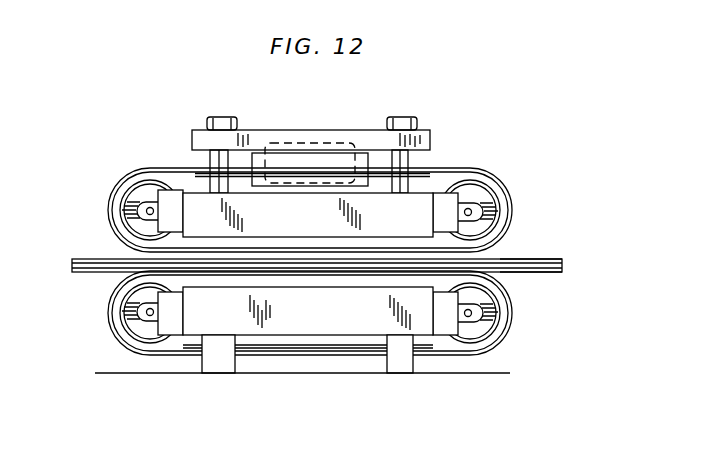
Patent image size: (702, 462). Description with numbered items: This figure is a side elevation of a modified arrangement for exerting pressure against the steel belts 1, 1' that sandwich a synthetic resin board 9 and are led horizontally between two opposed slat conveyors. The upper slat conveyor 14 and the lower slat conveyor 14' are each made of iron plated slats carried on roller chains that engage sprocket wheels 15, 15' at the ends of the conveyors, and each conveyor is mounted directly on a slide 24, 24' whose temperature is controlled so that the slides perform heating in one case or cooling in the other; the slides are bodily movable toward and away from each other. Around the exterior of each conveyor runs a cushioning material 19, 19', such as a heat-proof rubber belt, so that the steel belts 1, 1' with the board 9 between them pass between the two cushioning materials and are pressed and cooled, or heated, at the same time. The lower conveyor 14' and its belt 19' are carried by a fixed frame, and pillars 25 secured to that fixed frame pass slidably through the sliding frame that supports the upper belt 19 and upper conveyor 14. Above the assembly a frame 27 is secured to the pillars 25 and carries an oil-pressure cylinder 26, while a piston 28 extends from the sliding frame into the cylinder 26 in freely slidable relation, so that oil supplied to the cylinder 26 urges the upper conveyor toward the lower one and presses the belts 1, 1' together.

The frame 27 is at (202, 135).
The oil-pressure cylinder 26 is at (362, 158).
The piston 28 is at (303, 187).
The pillars 25 is at (200, 165).
The cushioning material 19 is at (296, 198).
The slat conveyor 14 is at (108, 210).
The sprocket wheel 15 is at (97, 225).
The slide 24 is at (308, 213).
The workpiece strip 9 is at (562, 265).
The steel belt 1 is at (531, 243).
The steel belt 1' is at (531, 288).
The cushioning material 19' is at (310, 340).
The slat conveyor 14' is at (308, 376).
The sprocket wheel 15' is at (111, 313).
The slide 24' is at (308, 311).